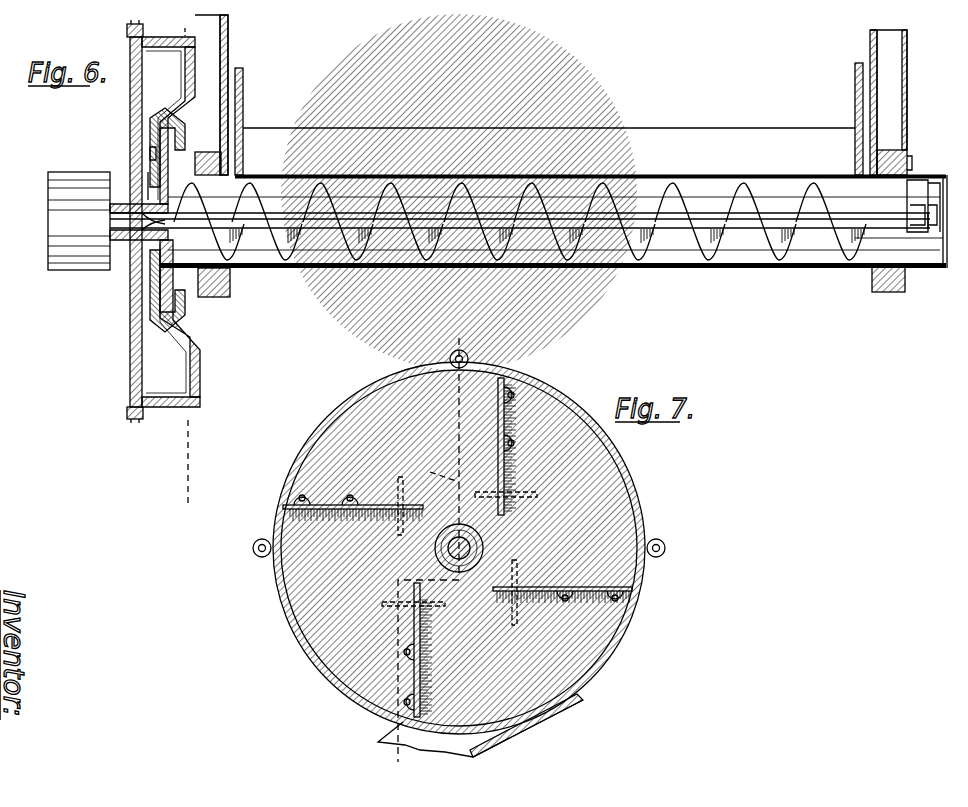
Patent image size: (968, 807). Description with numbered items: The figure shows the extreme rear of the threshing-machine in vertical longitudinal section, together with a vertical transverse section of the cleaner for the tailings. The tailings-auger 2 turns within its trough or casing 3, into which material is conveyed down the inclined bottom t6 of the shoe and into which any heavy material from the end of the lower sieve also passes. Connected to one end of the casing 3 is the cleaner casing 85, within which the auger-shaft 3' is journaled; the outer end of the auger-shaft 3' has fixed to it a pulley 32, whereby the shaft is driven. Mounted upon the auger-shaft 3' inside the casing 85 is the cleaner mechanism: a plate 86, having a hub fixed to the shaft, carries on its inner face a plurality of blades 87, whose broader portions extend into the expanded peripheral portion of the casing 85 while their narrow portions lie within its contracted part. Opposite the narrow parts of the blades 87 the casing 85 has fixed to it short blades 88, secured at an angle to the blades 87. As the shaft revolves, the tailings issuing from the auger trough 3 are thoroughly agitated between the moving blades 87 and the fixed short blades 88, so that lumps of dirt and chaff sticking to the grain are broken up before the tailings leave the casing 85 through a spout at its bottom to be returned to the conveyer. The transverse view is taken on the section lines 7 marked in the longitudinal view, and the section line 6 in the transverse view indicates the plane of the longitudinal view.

In FIG. 6, the tailings-auger 2 is at (358, 266).
In FIG. 6, the trough or casing of the tailings-auger 3 is at (520, 248).
In FIG. 6, the auger-shaft 3' is at (80, 221).
In FIG. 6, the pulley 32 is at (83, 270).
In FIG. 6, the inclined bottom of the shoe t6 is at (549, 147).
In FIG. 6, the casing 85 is at (200, 357).
In FIG. 7, the casing 85 is at (648, 510).
In FIG. 6, the plate 86 is at (131, 300).
In FIG. 7, the plate 86 is at (517, 526).
In FIG. 6, the blades 87 is at (166, 222).
In FIG. 7, the blades 87 is at (497, 406).
In FIG. 6, the short blades 88 is at (177, 152).
In FIG. 7, the short blades 88 is at (405, 482).
In FIG. 7, the section line 6 is at (428, 549).
In FIG. 6, the section lines 7 7 is at (186, 272).